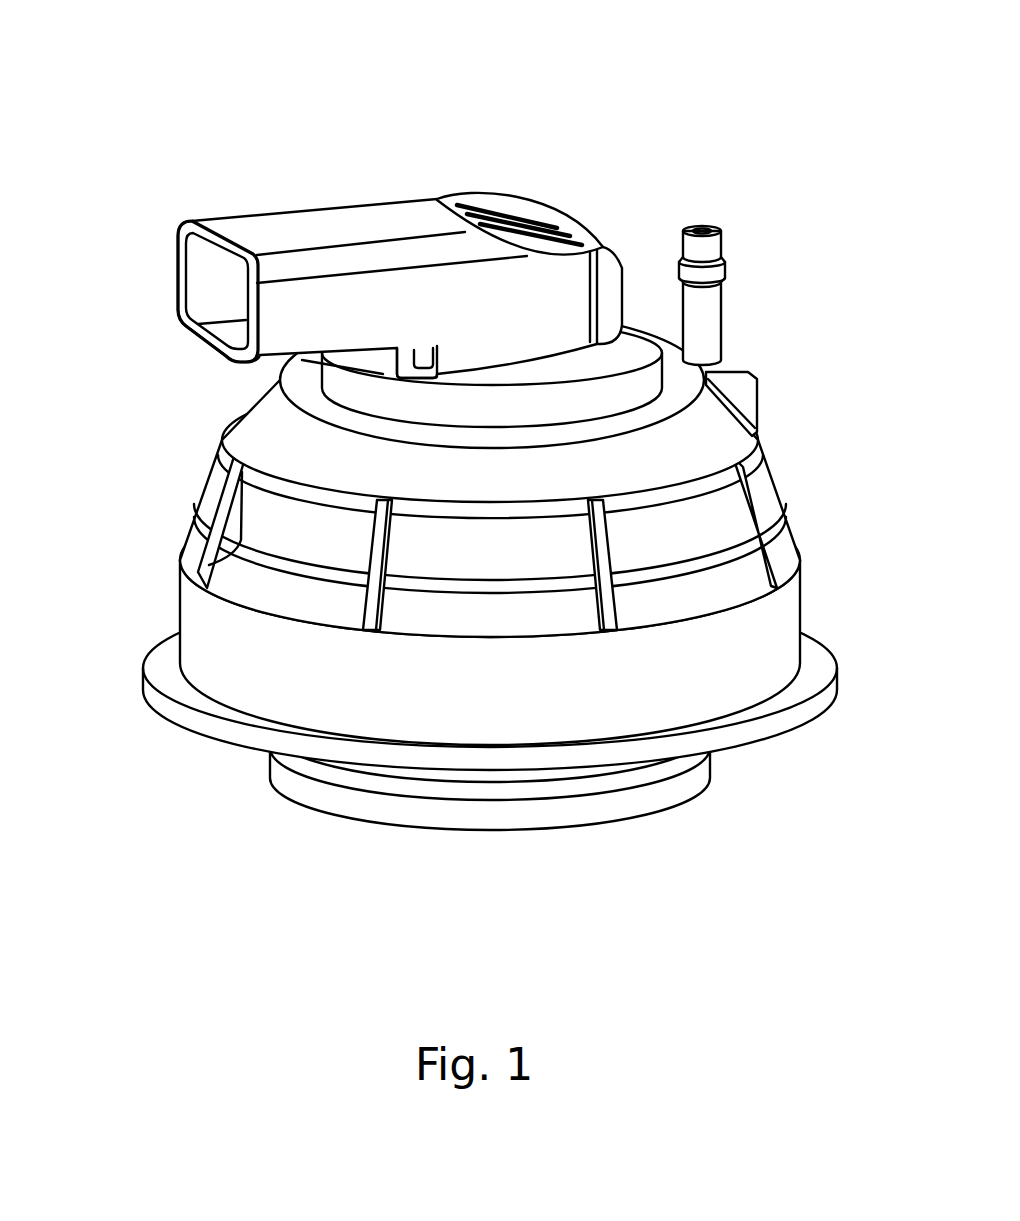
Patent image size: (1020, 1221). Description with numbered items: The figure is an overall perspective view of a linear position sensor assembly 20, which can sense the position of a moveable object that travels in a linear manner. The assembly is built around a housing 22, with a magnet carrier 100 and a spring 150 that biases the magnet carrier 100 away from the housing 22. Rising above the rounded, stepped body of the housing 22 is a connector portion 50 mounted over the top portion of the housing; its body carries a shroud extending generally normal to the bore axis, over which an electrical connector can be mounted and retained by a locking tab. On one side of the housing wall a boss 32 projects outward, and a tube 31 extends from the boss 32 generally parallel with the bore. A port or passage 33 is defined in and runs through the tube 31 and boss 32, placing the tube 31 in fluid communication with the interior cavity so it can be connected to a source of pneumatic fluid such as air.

The linear position sensor assembly 20 is at (466, 493).
The housing 22 is at (178, 588).
The tube 31 is at (785, 237).
The boss 32 is at (742, 372).
The port or passage 33 is at (708, 222).
The connector portion 50 is at (356, 196).
The magnet carrier 100 is at (490, 825).
The spring 150 is at (568, 797).